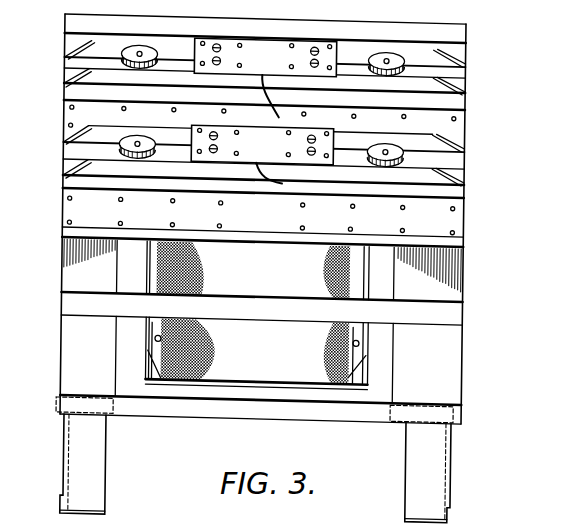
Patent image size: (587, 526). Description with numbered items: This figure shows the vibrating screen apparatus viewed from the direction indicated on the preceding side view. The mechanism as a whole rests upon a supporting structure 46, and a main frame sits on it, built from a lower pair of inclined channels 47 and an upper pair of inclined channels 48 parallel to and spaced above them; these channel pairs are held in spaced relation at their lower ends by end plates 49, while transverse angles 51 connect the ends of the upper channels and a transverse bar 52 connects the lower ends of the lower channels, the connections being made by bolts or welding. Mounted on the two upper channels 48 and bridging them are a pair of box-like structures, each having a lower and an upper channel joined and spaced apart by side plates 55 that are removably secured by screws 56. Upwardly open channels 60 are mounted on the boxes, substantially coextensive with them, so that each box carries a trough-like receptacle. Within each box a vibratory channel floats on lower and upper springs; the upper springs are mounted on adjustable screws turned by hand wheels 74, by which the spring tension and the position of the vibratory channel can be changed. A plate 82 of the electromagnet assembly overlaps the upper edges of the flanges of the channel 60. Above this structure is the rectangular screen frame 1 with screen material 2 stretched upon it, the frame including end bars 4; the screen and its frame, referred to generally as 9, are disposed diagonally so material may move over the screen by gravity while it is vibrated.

The screen frame 1 is at (147, 365).
The screen material 2 is at (215, 342).
The end bars 4 is at (237, 385).
The screen and its frame 9 is at (257, 313).
The supporting structure 46 is at (77, 452).
The lower inclined channels 47 is at (60, 405).
The upper inclined channels 48 is at (65, 274).
The end plates 49 is at (72, 355).
The transverse angles 51 is at (77, 22).
The transverse bar 52 is at (143, 410).
The side plates 55 is at (82, 118).
The screws 56 is at (122, 221).
The upwardly open channels 60 is at (82, 80).
The hand wheels 74 is at (152, 52).
The plate 82 is at (264, 111).